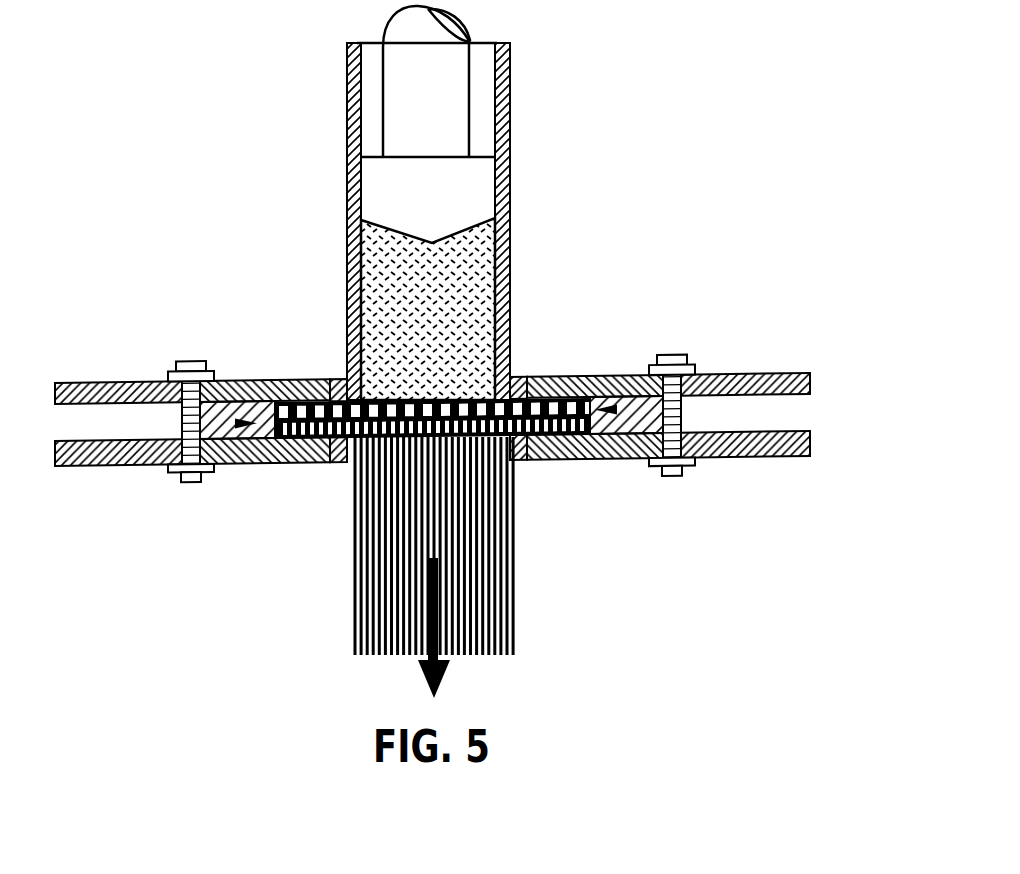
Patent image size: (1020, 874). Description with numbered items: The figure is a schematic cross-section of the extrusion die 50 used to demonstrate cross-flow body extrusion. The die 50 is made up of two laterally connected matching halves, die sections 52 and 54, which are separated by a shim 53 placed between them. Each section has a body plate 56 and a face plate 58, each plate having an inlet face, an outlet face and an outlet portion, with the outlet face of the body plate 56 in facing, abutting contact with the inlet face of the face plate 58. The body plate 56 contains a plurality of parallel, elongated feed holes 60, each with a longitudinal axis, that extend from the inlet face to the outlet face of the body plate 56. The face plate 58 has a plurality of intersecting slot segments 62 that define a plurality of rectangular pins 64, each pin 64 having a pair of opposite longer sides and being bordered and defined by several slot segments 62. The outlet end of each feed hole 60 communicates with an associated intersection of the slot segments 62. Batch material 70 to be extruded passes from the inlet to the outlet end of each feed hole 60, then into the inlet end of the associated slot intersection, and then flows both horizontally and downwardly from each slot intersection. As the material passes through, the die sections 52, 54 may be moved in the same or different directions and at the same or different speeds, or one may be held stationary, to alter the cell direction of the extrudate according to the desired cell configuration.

The die 50 is at (636, 135).
The die section 52 is at (178, 422).
The shim 53 is at (433, 400).
The die section 54 is at (690, 411).
The body plate 56 is at (215, 383).
The face plate 58 is at (225, 463).
The feed holes 60 is at (343, 383).
The slot segments 62 is at (338, 458).
The pins 64 is at (300, 458).
The batch material 70 is at (372, 258).